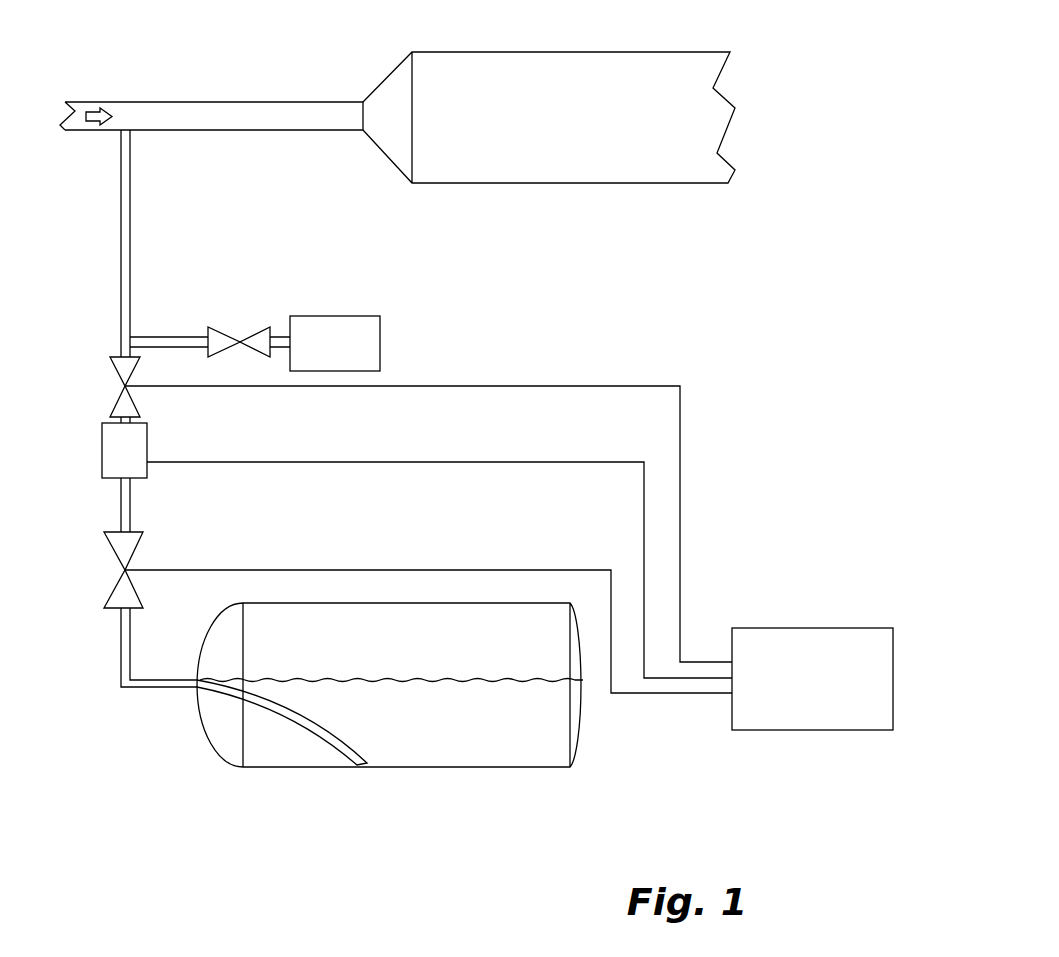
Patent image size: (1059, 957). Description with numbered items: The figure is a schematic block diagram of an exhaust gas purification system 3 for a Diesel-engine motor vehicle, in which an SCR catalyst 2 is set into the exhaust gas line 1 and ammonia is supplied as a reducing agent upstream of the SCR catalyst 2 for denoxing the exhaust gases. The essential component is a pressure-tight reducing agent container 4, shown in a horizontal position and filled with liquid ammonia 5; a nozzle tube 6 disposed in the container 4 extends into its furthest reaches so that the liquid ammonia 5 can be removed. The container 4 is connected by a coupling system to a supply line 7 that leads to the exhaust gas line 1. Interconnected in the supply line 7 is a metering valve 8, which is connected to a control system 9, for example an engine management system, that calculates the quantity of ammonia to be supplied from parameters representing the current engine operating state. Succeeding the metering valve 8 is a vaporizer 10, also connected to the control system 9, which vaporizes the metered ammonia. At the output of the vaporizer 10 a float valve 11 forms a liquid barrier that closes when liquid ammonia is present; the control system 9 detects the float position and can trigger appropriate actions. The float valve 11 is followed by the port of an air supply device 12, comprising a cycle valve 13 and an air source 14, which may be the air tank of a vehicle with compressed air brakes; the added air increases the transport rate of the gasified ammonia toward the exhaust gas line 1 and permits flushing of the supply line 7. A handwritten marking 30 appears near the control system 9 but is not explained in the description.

The exhaust gas line 1 is at (258, 108).
The SCR catalyst 2 is at (549, 117).
The exhaust gas purification system 3 is at (745, 340).
The reducing agent container 4 is at (208, 763).
The liquid ammonia 5 is at (391, 718).
The nozzle tube 6 is at (322, 715).
The supply line 7 is at (120, 277).
The metering valve 8 is at (100, 570).
The control system 9 is at (812, 679).
The vaporizer 10 is at (124, 450).
The float valve 11 is at (95, 385).
The air supply device 12 is at (350, 292).
The cycle valve 13 is at (243, 318).
The air source 14 is at (335, 343).
The control unit marking 30 is at (828, 628).